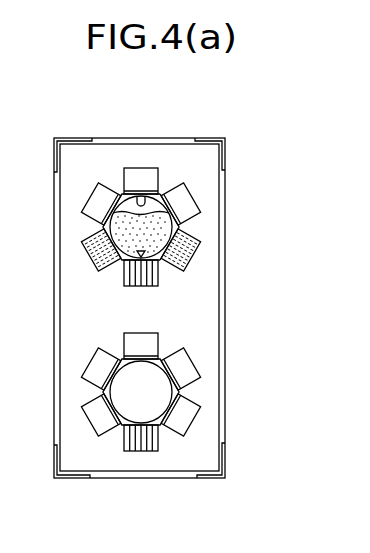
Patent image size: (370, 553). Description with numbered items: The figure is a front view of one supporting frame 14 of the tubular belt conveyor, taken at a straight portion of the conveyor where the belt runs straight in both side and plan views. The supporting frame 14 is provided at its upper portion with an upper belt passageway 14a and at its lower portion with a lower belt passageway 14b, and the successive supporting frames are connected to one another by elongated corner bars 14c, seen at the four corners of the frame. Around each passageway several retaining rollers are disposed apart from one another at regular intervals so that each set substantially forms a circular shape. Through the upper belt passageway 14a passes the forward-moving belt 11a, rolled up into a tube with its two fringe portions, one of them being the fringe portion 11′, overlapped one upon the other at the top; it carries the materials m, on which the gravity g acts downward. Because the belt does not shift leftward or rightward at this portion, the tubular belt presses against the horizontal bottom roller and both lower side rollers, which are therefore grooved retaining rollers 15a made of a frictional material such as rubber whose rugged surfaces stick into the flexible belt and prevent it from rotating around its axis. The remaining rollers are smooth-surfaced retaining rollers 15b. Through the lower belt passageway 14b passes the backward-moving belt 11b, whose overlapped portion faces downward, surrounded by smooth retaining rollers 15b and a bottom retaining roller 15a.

The supporting frame 14 is at (172, 139).
The elongated corner bar 14c is at (213, 139).
The upper belt passageway 14a is at (180, 227).
The lower belt passageway 14b is at (184, 390).
The fringe portion of the belt 11′ is at (140, 205).
The forward-moving belt 11a is at (103, 227).
The backward-moving belt 11b is at (184, 399).
The grooved retaining roller 15a is at (90, 263).
The smooth-surfaced retaining roller 15b is at (95, 198).
The materials to be conveyed m is at (156, 258).
The gravity of the material g is at (121, 272).